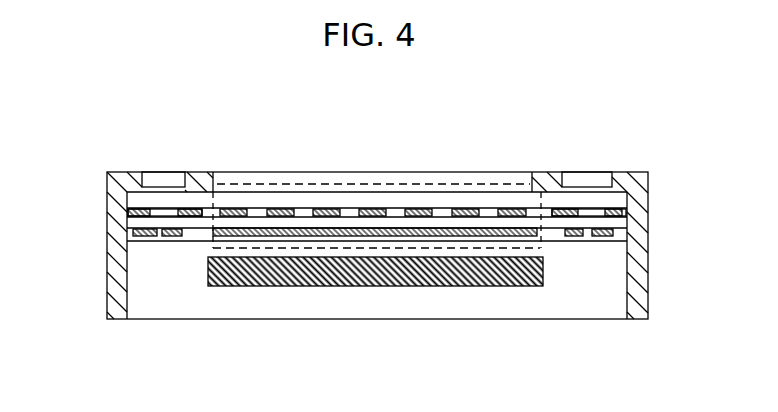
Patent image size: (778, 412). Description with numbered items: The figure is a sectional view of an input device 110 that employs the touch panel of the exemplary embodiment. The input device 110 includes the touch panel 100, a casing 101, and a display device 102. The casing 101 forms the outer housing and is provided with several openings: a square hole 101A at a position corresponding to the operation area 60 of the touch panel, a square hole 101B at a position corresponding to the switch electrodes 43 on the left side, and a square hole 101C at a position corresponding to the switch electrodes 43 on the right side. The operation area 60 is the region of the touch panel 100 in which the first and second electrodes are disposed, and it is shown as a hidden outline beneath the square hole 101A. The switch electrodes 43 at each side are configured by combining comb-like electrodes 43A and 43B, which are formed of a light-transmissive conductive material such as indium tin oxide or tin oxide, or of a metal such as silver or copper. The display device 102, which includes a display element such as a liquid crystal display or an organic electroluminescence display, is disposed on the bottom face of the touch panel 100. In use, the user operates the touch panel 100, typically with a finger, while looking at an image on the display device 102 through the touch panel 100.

The input device 110 is at (503, 137).
The casing 101 is at (118, 280).
The square hole 101A is at (392, 182).
The square hole 101B is at (157, 180).
The square hole 101C is at (580, 180).
The operation area 60 is at (309, 184).
The touch panel 100 is at (90, 188).
The switch electrodes 43 is at (105, 360).
The comb-like electrode 43A is at (143, 236).
The comb-like electrode 43B is at (175, 236).
The display device 102 is at (463, 285).